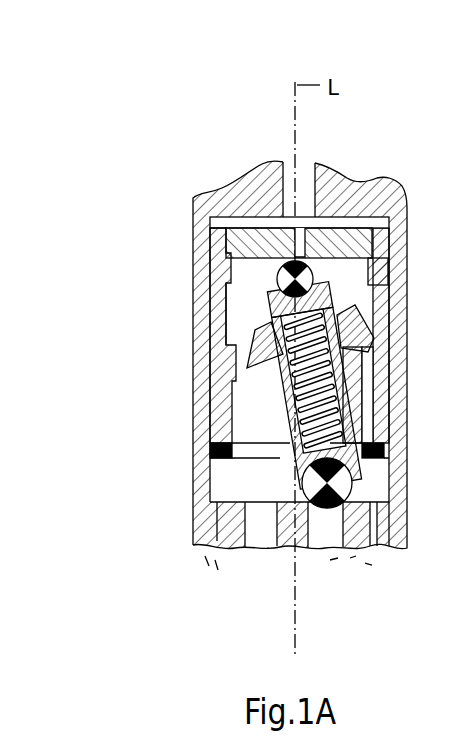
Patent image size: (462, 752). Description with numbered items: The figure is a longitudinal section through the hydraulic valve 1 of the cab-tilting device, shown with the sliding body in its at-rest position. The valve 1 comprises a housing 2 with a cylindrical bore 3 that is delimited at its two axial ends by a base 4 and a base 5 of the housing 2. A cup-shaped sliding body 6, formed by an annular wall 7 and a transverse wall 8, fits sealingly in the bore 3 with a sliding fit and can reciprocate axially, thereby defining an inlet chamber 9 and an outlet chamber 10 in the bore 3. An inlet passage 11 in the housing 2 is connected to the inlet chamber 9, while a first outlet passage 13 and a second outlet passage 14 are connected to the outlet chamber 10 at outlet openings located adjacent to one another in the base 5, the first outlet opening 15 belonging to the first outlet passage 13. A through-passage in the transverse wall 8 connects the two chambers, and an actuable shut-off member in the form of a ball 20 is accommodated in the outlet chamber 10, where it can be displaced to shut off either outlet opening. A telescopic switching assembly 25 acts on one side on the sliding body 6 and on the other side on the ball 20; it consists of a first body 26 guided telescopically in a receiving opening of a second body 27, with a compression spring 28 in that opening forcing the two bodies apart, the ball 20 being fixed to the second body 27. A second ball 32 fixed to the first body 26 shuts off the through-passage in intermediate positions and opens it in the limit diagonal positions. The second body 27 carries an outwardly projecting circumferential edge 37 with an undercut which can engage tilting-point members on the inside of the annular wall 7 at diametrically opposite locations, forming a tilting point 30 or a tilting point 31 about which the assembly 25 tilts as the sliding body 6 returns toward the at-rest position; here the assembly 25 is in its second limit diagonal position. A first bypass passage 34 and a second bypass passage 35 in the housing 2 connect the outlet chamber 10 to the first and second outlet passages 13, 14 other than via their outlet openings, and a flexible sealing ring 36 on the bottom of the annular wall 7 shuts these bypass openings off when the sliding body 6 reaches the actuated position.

The hydraulic valve 1 is at (212, 125).
The housing 2 is at (388, 190).
The cylindrical bore 3 is at (232, 483).
The base 4 is at (248, 217).
The base 5 is at (234, 513).
The sliding body 6 is at (405, 217).
The annular wall 7 is at (228, 375).
The transverse wall 8 is at (243, 240).
The inlet chamber 9 is at (350, 224).
The outlet chamber 10 is at (251, 496).
The inlet passage 11 is at (301, 183).
The first outlet passage 13 is at (258, 528).
The second outlet passage 14 is at (325, 525).
The first outlet opening 15 is at (273, 527).
The ball 20 is at (343, 485).
The switching assembly 25 is at (270, 413).
The first body 26 is at (323, 297).
The second body 27 is at (345, 419).
The spring 28 is at (318, 378).
The tilting point 30 is at (232, 338).
The tilting point 31 is at (367, 343).
The second ball 32 is at (310, 271).
The first bypass passage 34 is at (217, 528).
The second bypass passage 35 is at (387, 523).
The flexible sealing ring 36 is at (387, 453).
The circumferential edge 37 is at (258, 333).